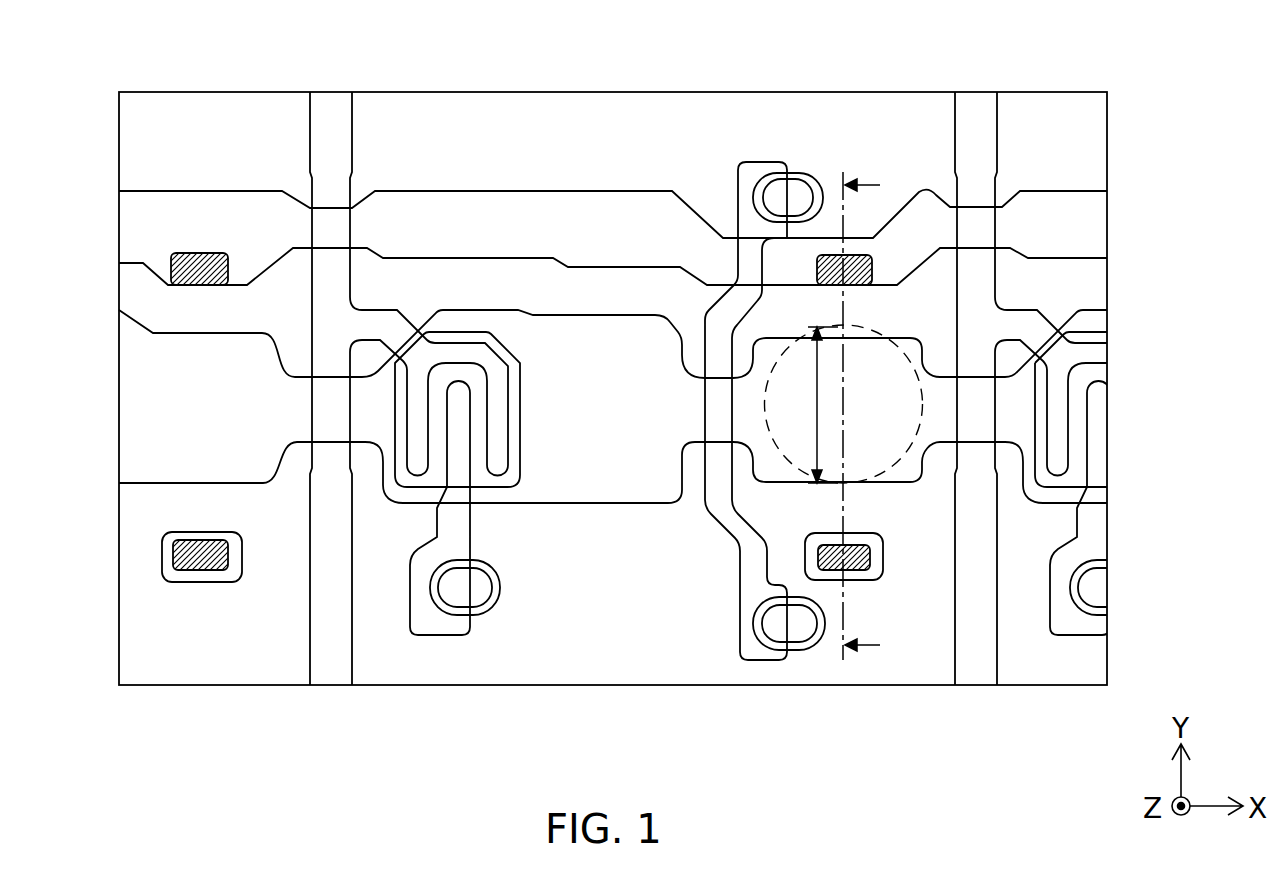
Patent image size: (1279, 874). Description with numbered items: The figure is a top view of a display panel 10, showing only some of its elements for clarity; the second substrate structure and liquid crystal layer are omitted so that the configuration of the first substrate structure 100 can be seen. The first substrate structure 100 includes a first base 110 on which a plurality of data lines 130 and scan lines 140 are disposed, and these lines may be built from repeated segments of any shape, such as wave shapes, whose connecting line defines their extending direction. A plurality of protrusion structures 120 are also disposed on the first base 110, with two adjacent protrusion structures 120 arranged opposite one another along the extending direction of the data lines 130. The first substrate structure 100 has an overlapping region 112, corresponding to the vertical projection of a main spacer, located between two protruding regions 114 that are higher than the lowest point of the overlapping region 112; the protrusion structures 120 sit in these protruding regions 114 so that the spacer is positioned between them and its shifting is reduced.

The display panel 10 is at (127, 50).
The first substrate structure 100 is at (610, 110).
The first base 110 is at (443, 112).
The overlapping region 112 is at (923, 417).
The protruding regions 114 is at (860, 560).
The protrusion structures 120 is at (857, 276).
The data lines 130 is at (330, 112).
The scan lines 140 is at (140, 388).